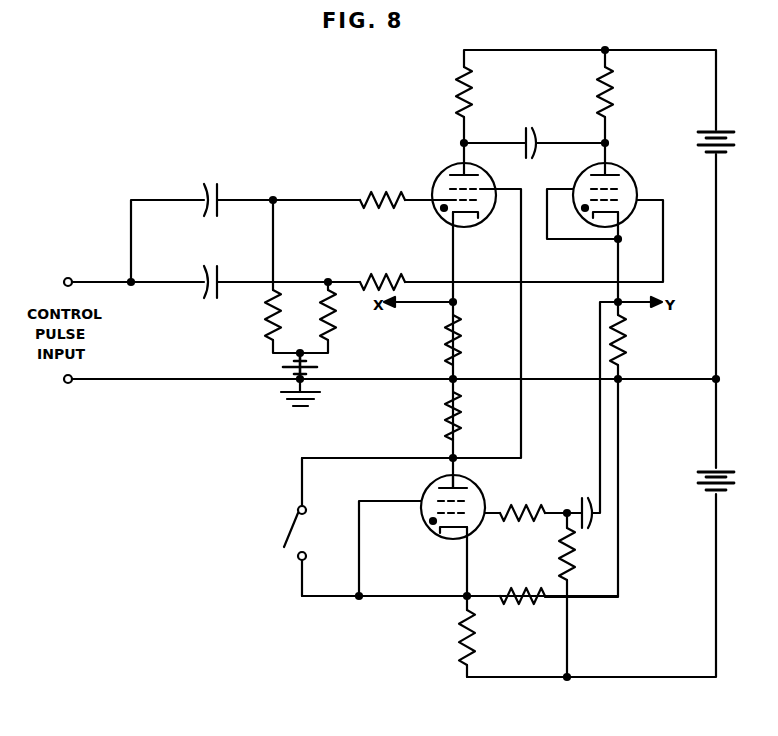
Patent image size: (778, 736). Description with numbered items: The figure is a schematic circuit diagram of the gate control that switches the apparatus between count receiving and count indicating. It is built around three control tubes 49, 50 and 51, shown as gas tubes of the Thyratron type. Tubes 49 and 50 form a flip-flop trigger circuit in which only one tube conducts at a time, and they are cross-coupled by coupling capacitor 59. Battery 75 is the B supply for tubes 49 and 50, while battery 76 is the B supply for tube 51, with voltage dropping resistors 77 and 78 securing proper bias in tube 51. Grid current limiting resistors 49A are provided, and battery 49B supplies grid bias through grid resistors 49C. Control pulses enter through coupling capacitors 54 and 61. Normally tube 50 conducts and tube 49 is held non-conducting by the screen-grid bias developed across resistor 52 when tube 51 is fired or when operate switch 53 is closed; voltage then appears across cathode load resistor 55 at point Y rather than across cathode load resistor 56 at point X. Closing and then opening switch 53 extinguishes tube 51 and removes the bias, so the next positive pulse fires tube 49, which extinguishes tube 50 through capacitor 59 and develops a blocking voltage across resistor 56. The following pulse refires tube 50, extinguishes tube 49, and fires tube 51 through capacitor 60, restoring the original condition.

The coupling capacitor 54 is at (218, 196).
The coupling capacitor 61 is at (218, 270).
The grid current limiting resistor 49A is at (378, 193).
The grid resistor 49C is at (268, 331).
The bias battery 49B is at (306, 362).
The coupling capacitor 59 is at (527, 129).
The control tube 49 is at (482, 219).
The control tube 50 is at (630, 219).
The battery 75 is at (708, 130).
The battery 76 is at (708, 469).
The cathode load resistor 56 is at (461, 338).
The cathode load resistor 55 is at (626, 338).
The resistor 52 is at (461, 418).
The operate switch 53 is at (290, 534).
The control tube 51 is at (440, 533).
The capacitor 60 is at (588, 526).
The voltage dropping resistor 77 is at (532, 605).
The voltage dropping resistor 78 is at (478, 641).